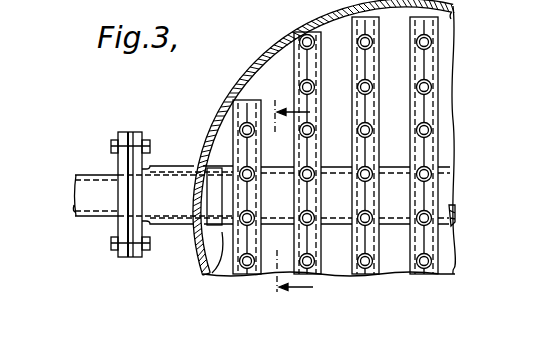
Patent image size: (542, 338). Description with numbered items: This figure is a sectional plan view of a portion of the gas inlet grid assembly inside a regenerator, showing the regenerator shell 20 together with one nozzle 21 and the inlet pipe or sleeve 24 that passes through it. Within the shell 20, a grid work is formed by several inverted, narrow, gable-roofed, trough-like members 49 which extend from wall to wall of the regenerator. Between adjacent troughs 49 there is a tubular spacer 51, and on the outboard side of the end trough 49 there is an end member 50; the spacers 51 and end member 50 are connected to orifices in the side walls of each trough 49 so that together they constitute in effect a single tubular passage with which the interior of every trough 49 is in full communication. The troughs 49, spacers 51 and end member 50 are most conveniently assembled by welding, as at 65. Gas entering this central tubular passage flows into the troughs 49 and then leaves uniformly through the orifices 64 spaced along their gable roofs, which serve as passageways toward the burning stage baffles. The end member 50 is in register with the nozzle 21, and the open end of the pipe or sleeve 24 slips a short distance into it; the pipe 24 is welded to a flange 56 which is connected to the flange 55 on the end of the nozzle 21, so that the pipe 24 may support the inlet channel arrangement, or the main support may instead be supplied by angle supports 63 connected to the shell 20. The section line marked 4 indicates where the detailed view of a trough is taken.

The shell 20 is at (279, 35).
The nozzle 21 is at (168, 166).
The inlet pipe or sleeve 24 is at (88, 209).
The trough-like member 49 is at (380, 116).
The end member 50 is at (203, 275).
The tubular spacer 51 is at (337, 224).
The flange 55 is at (187, 253).
The flange 56 is at (112, 158).
The angle support 63 is at (212, 165).
The orifice 64 is at (435, 41).
The weld 65 is at (407, 168).
The section line 4- 4 is at (290, 196).